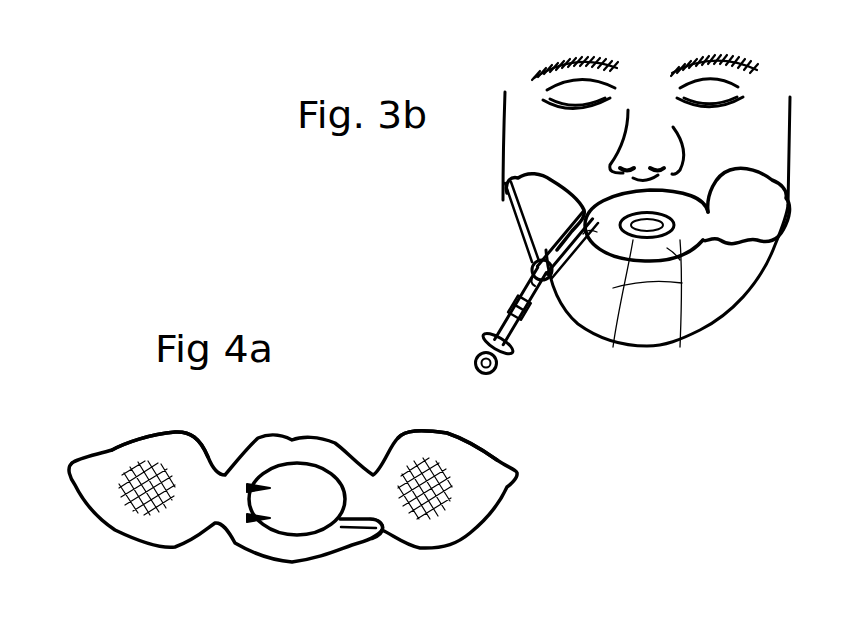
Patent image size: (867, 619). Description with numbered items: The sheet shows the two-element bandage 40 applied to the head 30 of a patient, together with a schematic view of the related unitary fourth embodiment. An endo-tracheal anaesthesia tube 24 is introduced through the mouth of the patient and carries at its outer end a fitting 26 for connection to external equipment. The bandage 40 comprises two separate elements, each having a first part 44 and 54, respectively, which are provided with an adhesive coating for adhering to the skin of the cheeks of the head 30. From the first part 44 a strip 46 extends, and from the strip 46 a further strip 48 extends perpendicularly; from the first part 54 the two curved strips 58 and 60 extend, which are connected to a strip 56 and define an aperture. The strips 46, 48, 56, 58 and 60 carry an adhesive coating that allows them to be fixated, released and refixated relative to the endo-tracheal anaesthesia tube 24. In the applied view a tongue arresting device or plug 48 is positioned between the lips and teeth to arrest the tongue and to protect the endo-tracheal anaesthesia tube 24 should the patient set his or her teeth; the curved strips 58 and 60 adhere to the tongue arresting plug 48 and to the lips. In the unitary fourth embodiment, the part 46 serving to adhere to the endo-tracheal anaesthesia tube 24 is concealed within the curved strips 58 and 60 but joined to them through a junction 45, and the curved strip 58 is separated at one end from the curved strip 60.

In FIG. 3b, the endo-tracheal anaesthesia tube 24 is at (500, 317).
In FIG. 3b, the fitting 26 is at (476, 358).
In FIG. 3b, the head 30 is at (762, 52).
In FIG. 4a, the head 30 is at (760, 615).
In FIG. 4a, the bandage 40 is at (374, 551).
In FIG. 3b, the first part 44 is at (509, 193).
In FIG. 4a, the first part 44 is at (137, 530).
In FIG. 4a, the junction 45 is at (243, 503).
In FIG. 3b, the strip 46 is at (526, 247).
In FIG. 4a, the strip 46 is at (293, 520).
In FIG. 3b, the tongue arresting device 48 is at (532, 271).
In FIG. 3b, the first part 54 is at (755, 218).
In FIG. 4a, the first part 54 is at (473, 507).
In FIG. 3b, the strip 56 is at (583, 252).
In FIG. 3b, the curved strip 58 is at (680, 347).
In FIG. 4a, the curved strip 58 is at (313, 555).
In FIG. 3b, the curved strip 60 is at (683, 198).
In FIG. 4a, the curved strip 60 is at (315, 443).